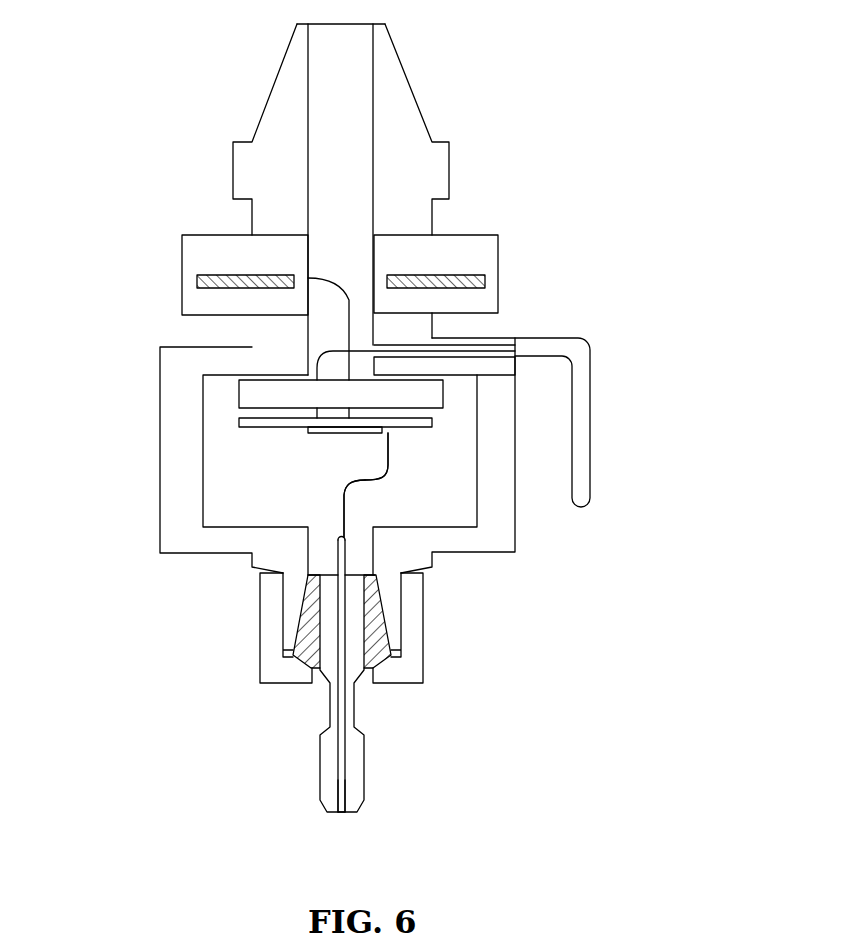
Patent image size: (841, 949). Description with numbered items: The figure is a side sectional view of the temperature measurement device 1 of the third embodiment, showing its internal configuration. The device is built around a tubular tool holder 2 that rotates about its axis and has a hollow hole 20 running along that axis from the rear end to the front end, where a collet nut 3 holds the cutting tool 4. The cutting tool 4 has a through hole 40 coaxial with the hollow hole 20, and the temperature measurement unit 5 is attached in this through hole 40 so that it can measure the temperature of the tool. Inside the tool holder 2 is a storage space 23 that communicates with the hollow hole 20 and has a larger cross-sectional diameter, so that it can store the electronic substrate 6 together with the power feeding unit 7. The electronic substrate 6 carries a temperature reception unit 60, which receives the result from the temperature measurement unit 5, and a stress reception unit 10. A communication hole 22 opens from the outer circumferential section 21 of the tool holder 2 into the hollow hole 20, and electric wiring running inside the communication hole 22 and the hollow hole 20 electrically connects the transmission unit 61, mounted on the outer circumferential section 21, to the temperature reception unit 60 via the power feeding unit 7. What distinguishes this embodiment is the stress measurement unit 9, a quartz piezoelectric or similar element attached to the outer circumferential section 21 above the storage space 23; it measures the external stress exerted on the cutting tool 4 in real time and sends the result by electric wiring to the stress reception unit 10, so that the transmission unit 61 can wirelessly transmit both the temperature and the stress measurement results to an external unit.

The temperature measurement device 1 is at (160, 110).
The tool holder 2 is at (398, 118).
The hollow hole 20 is at (362, 72).
The outer circumferential section 21 is at (283, 98).
The stress measurement unit 9 is at (218, 272).
The power feeding unit 7 is at (239, 398).
The communication hole 22 is at (413, 343).
The storage space 23 is at (460, 433).
The electronic substrate 6 is at (400, 432).
The temperature reception unit 60 is at (467, 503).
The stress reception unit 10 is at (477, 527).
The transmission unit 61 is at (592, 500).
The collet nut 3 is at (273, 655).
The cutting tool 4 is at (330, 792).
The temperature measurement unit 5 is at (343, 768).
The through hole 40 is at (345, 787).